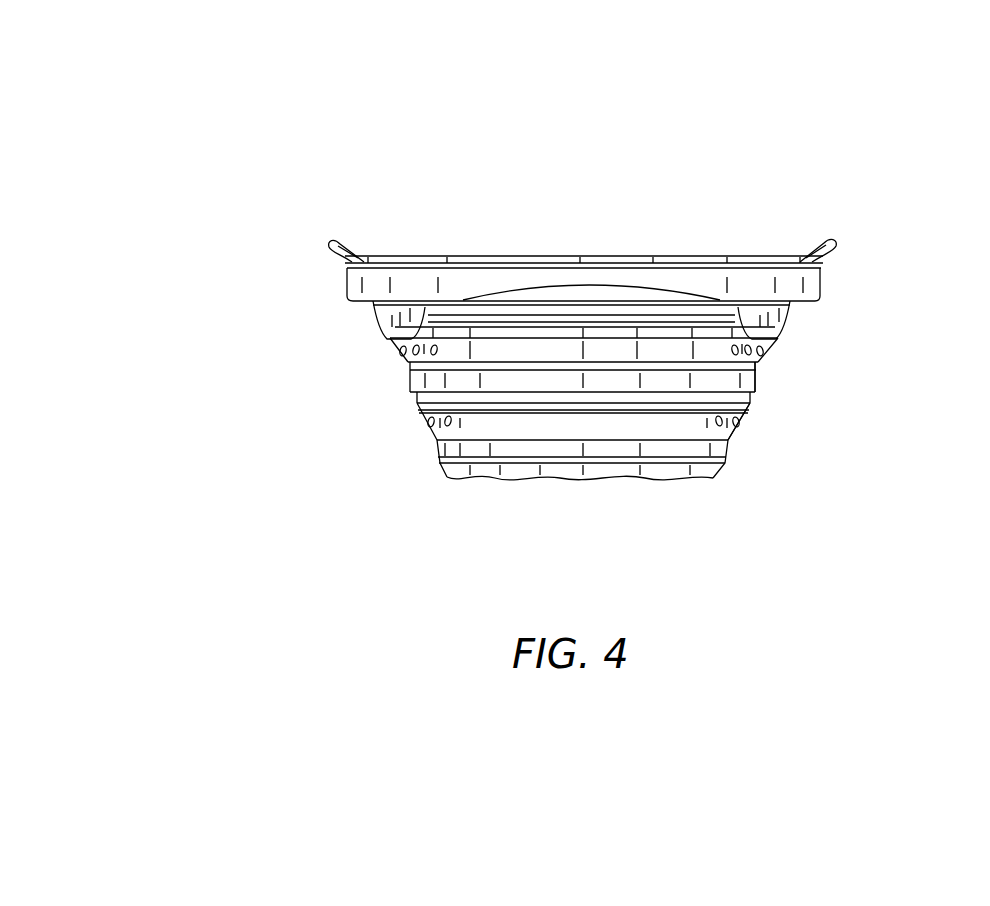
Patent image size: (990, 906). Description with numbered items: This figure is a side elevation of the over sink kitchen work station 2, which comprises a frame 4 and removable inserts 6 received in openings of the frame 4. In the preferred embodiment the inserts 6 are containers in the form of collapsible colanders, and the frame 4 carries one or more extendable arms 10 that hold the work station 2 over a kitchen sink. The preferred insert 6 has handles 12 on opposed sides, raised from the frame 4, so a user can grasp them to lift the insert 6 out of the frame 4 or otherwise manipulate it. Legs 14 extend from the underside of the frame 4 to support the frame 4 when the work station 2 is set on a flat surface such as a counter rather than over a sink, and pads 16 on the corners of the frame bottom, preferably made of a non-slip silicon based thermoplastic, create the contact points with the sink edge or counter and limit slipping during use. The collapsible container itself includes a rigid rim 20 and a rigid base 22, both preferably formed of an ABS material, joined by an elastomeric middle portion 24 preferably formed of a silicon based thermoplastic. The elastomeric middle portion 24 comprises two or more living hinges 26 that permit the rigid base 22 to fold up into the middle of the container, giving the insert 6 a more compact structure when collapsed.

The over sink work station 2 is at (240, 182).
The frame 4 is at (822, 283).
The removable insert 6 is at (587, 492).
The extendable arm 10 is at (790, 300).
The handle 12 is at (807, 241).
The leg 14 is at (388, 335).
The pad 16 is at (400, 327).
The rigid rim 20 is at (553, 256).
The rigid base 22 is at (442, 468).
The elastomeric middle portion 24 is at (412, 406).
The living hinge 26 is at (617, 325).